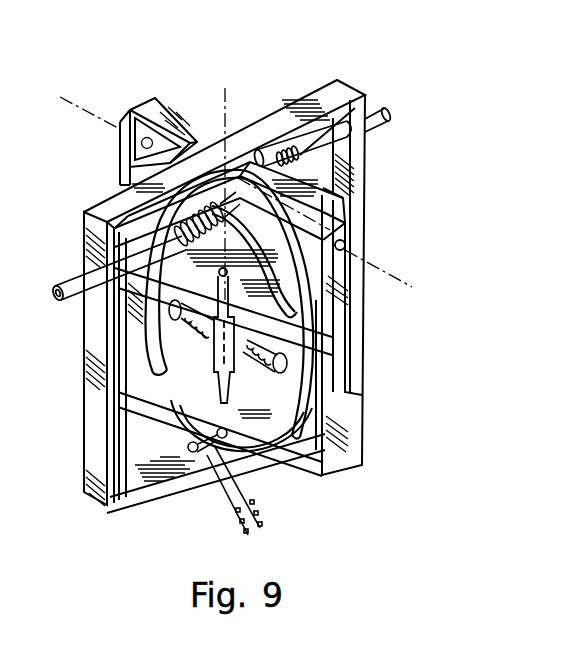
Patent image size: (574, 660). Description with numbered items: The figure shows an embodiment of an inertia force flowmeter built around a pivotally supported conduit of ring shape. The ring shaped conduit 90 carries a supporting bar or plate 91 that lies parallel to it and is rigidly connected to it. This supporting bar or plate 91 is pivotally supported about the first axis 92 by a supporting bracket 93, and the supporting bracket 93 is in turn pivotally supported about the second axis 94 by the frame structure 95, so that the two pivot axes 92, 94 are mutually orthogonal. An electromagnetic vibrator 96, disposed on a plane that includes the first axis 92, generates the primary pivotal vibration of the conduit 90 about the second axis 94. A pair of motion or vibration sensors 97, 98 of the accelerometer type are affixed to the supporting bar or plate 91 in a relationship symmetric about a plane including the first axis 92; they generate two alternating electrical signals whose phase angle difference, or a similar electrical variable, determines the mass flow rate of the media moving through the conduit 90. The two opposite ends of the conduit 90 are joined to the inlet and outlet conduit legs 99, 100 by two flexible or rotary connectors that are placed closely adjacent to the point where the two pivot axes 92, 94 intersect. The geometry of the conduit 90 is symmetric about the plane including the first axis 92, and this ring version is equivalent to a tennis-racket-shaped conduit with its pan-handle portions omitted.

The ring shaped conduit 90 is at (285, 495).
The supporting bar or plate 91 is at (327, 293).
The first axis 92 is at (225, 90).
The supporting bracket 93 is at (336, 363).
The second axis 94 is at (80, 112).
The frame structure 95 is at (80, 235).
The electromagnetic vibrator 96 is at (196, 451).
The motion or vibration sensor 97 is at (150, 334).
The motion or vibration sensor 98 is at (283, 385).
The inlet conduit leg 99 is at (60, 276).
The outlet conduit leg 100 is at (370, 104).